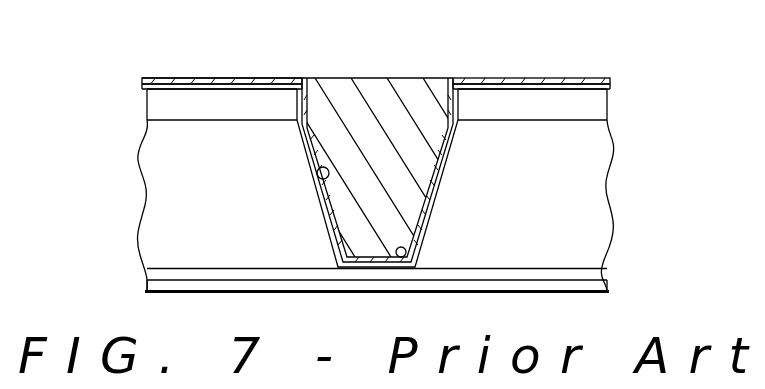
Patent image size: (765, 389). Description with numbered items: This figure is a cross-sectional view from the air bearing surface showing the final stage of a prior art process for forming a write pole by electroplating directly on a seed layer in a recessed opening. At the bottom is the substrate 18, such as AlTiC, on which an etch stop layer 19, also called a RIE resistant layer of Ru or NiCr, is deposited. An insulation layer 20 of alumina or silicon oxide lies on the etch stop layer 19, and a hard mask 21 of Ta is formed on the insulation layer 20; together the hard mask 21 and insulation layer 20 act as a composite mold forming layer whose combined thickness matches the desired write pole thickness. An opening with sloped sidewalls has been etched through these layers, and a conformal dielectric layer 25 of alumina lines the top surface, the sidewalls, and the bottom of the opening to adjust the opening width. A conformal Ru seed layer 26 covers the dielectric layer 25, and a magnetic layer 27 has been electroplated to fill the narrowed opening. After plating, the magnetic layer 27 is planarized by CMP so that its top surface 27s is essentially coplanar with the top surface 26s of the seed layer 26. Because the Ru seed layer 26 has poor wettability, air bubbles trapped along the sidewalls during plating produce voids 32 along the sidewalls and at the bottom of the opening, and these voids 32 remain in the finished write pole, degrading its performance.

The substrate 18 is at (143, 290).
The etch stop layer 19 is at (594, 273).
The insulation layer 20 is at (596, 206).
The hard mask 21 is at (152, 105).
The dielectric layer 25 is at (610, 84).
The seed layer 26 is at (604, 78).
The top surface of seed layer 26s is at (170, 79).
The magnetic layer 27 is at (341, 92).
The top surface of write pole 27s is at (387, 80).
The voids 32 is at (317, 175).